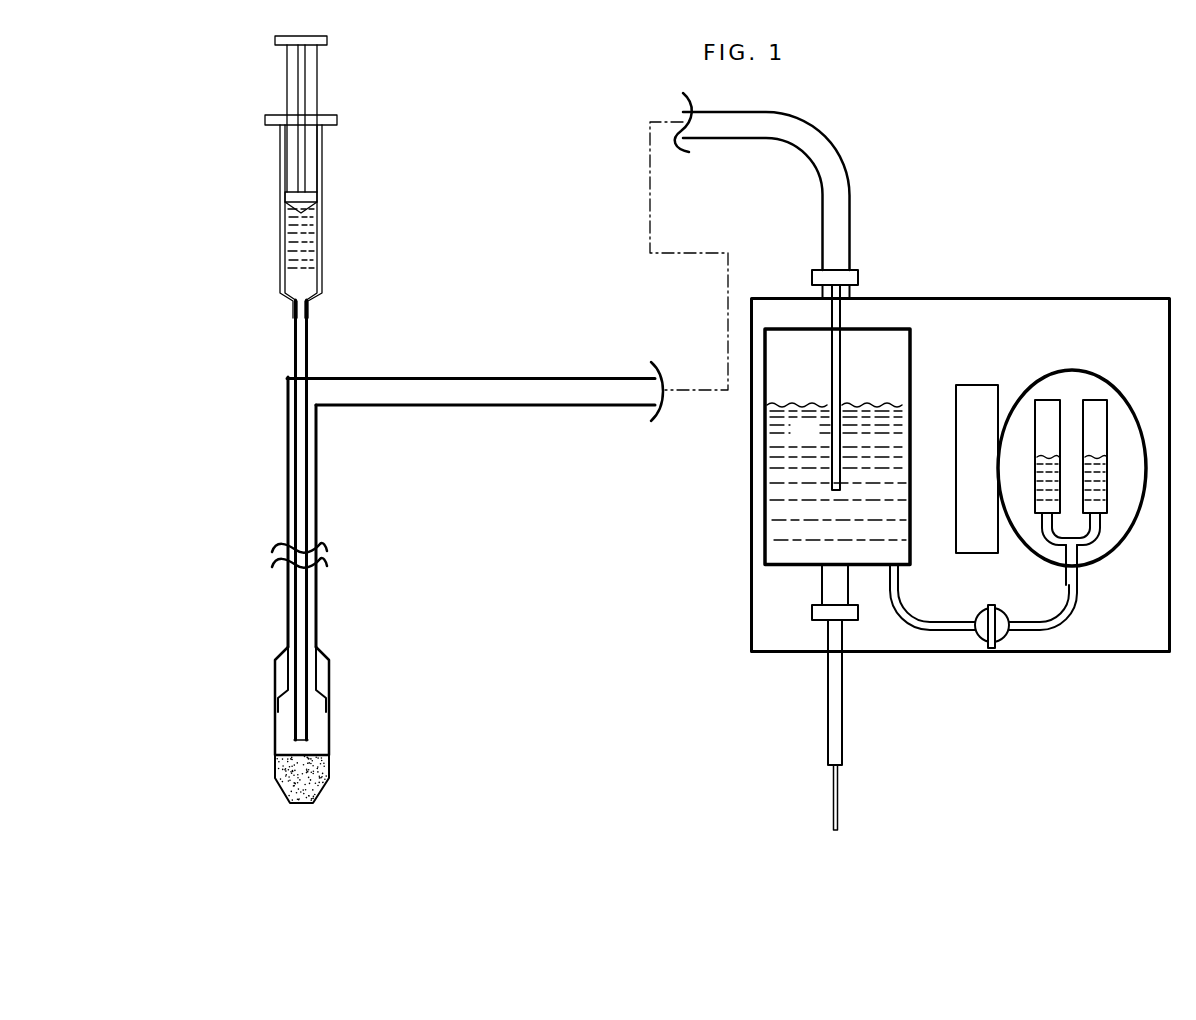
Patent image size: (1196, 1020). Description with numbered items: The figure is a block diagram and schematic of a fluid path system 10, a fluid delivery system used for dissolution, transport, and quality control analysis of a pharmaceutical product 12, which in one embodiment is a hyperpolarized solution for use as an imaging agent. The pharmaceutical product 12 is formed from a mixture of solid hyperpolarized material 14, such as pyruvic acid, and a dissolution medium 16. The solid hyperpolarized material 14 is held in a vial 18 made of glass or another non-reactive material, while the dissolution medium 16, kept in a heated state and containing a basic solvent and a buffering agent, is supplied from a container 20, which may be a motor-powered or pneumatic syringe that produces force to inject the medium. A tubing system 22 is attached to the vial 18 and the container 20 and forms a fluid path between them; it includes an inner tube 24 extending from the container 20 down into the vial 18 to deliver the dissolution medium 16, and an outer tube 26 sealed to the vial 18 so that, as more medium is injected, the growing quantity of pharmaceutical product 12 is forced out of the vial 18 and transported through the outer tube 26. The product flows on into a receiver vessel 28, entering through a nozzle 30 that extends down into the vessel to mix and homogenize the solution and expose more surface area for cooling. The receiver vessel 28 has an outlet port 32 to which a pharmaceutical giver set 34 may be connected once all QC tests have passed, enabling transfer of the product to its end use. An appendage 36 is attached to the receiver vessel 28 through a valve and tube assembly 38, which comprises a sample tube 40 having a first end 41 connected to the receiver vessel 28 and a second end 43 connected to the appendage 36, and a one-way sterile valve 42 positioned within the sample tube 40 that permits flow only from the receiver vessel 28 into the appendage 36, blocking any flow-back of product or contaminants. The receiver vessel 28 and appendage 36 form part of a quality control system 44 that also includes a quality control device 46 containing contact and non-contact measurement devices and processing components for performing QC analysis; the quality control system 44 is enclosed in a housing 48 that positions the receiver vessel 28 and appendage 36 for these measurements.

The fluid path system 10 is at (501, 96).
The pharmaceutical product 12 is at (817, 440).
The solid hyperpolarized material 14 is at (283, 790).
The dissolution medium 16 is at (312, 265).
The vial 18 is at (330, 690).
The container 20 is at (280, 177).
The tubing system 22 is at (285, 483).
The inner tube 24 is at (300, 724).
The outer tube 26 is at (463, 377).
The receiver vessel 28 is at (888, 326).
The nozzle 30 is at (842, 490).
The outlet port 32 is at (843, 712).
The pharmaceutical giver set 34 is at (838, 800).
The appendage 36 is at (1072, 370).
The valve and tube assembly 38 is at (1072, 612).
The sample tube 40 is at (934, 620).
The first end 41 is at (900, 578).
The one-way sterile valve 42 is at (1002, 636).
The second end 43 is at (1078, 577).
The quality control system 44 is at (1105, 292).
The quality control device 46 is at (985, 385).
The housing 48 is at (750, 633).